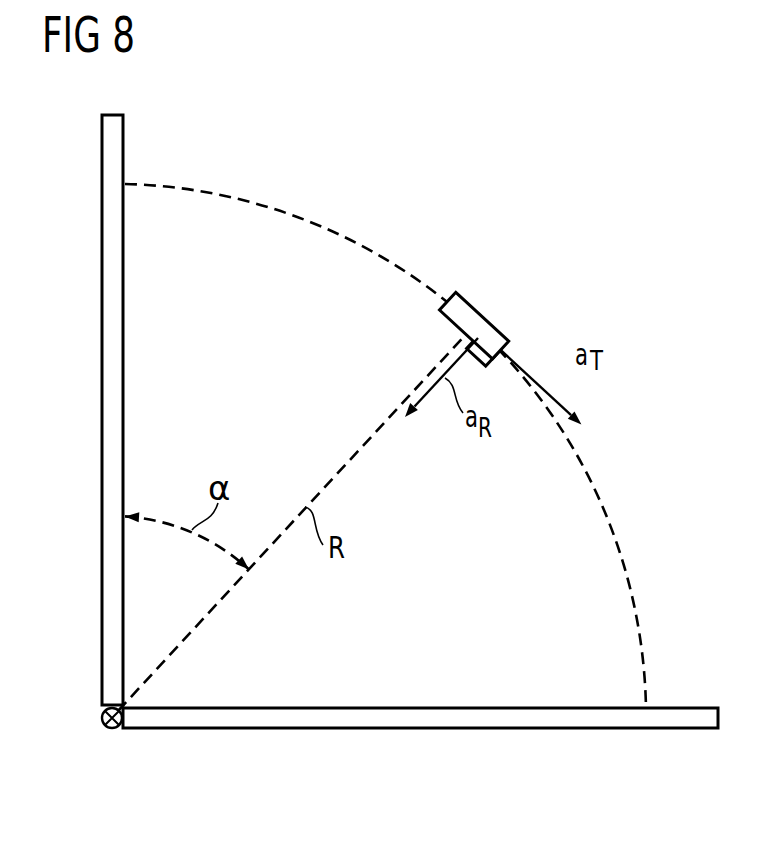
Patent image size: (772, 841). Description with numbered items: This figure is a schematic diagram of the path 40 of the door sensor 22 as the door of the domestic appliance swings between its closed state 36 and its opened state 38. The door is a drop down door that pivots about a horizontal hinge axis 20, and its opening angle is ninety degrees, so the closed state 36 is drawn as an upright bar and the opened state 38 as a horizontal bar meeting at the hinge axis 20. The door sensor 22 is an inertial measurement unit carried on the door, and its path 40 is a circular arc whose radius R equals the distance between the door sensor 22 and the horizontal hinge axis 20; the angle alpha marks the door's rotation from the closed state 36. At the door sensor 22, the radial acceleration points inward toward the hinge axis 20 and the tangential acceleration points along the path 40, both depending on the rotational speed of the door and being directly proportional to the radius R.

The horizontal hinge axis 20 is at (113, 729).
The door sensor 22 is at (468, 316).
The closed state 36 is at (113, 380).
The opened state 38 is at (420, 729).
The path 40 is at (606, 507).